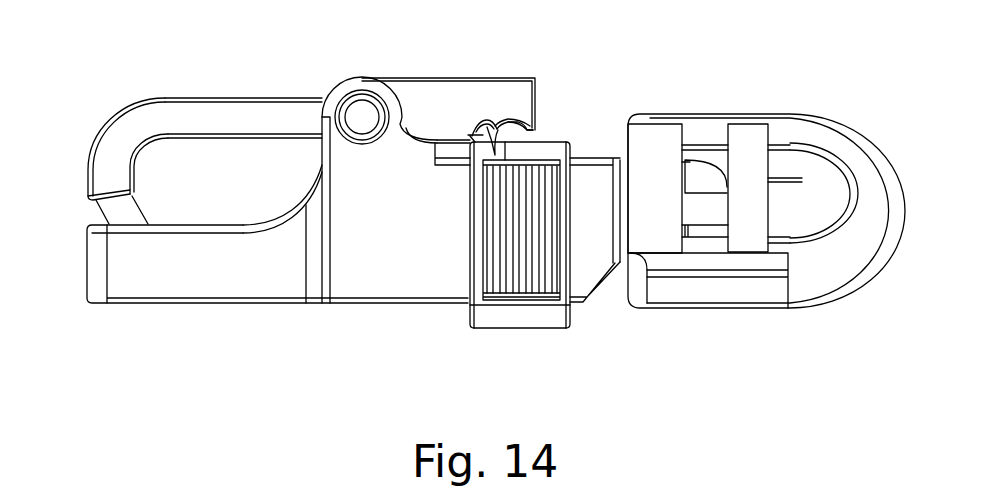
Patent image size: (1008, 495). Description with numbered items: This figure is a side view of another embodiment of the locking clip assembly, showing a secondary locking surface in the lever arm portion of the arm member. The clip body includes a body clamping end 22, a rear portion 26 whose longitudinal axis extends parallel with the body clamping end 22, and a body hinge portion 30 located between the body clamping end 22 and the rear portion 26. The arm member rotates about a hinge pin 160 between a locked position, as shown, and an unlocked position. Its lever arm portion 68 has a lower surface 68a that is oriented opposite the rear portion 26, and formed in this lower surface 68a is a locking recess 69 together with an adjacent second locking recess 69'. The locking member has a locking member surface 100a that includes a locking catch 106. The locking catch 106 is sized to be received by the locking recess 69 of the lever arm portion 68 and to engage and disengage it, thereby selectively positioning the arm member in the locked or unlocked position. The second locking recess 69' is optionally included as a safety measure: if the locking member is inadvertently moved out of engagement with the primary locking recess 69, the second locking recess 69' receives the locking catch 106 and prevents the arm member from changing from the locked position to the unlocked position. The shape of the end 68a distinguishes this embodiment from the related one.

The body clamping end 22 is at (188, 305).
The rear portion 26 is at (600, 283).
The body hinge portion 30 is at (377, 307).
The lever arm portion 68 is at (448, 77).
The lower surface 68a is at (533, 113).
The locking recess 69 is at (488, 82).
The second locking recess 69' is at (538, 76).
The locking member surface 100a is at (558, 130).
The locking catch 106 is at (482, 130).
The hinge pin 160 is at (361, 117).